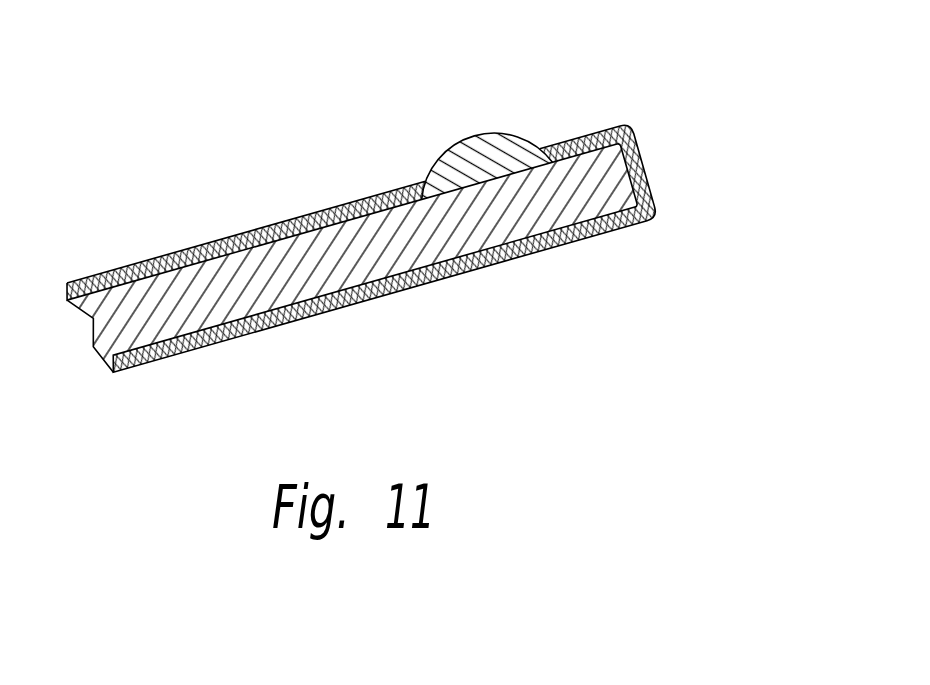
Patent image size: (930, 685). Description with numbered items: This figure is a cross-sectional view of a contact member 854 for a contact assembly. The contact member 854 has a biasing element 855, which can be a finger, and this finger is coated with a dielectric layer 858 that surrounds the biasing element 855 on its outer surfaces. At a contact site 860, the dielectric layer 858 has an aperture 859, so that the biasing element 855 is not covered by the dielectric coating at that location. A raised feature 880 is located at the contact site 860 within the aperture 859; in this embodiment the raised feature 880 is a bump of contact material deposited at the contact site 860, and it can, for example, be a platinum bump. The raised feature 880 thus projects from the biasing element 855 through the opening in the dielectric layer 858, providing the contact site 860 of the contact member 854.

The contact member 854 is at (350, 255).
The biasing element 855 is at (291, 291).
The dielectric layer 858 is at (482, 260).
The aperture 859 is at (420, 187).
The contact site 860 is at (468, 114).
The raised feature 880 is at (445, 125).